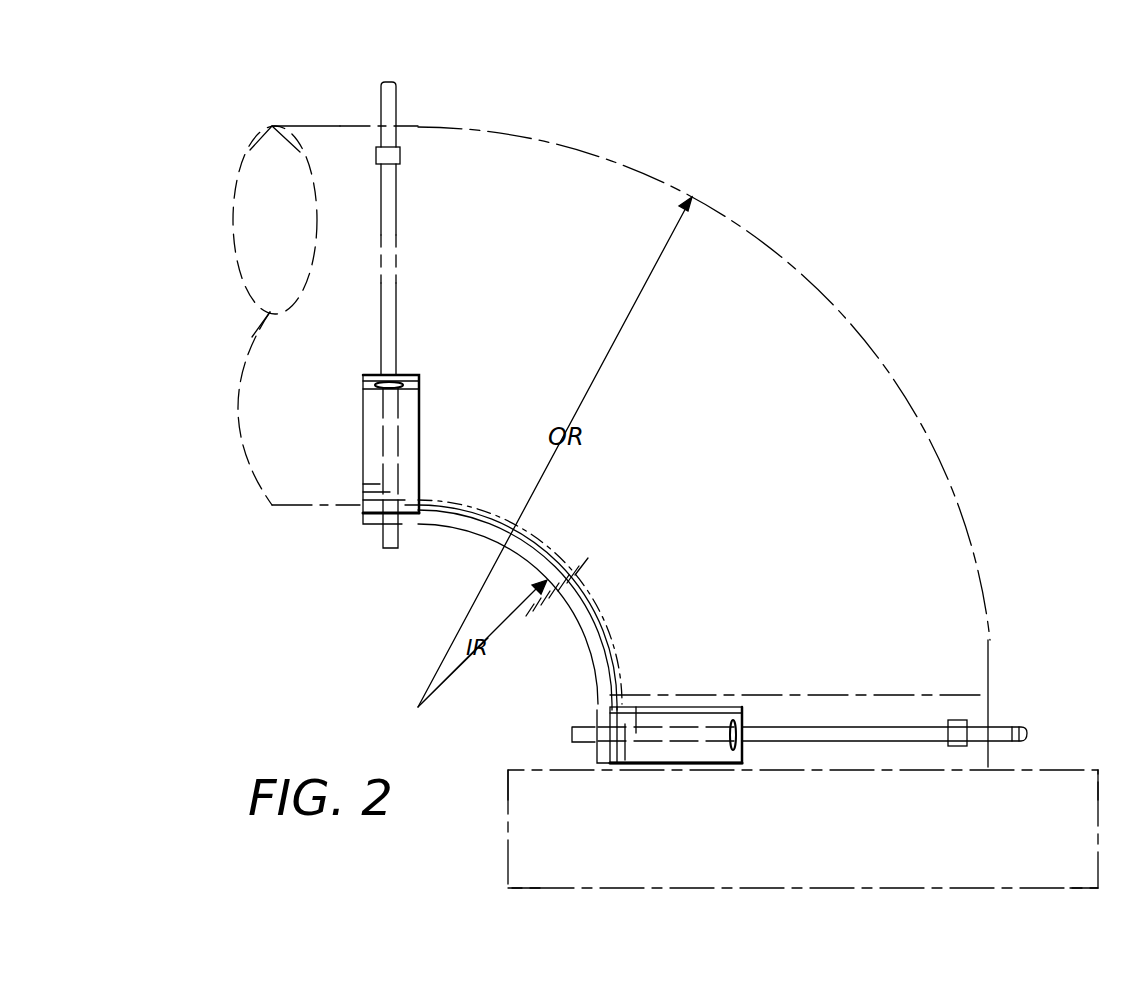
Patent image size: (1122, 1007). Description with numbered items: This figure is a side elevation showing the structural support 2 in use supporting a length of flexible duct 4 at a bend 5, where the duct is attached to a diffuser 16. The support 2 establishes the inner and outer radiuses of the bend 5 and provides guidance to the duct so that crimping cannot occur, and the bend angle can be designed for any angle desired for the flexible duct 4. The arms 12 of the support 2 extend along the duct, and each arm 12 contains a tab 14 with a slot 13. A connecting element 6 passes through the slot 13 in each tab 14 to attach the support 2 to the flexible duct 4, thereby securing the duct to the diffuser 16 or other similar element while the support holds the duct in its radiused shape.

The structural support 2 is at (305, 607).
The flexible duct 4 is at (772, 421).
The bend 5 is at (845, 318).
The connecting element 6 is at (388, 82).
The arm 12 is at (420, 449).
The slot 13 is at (401, 388).
The tab 14 is at (414, 378).
The diffuser 16 is at (832, 849).